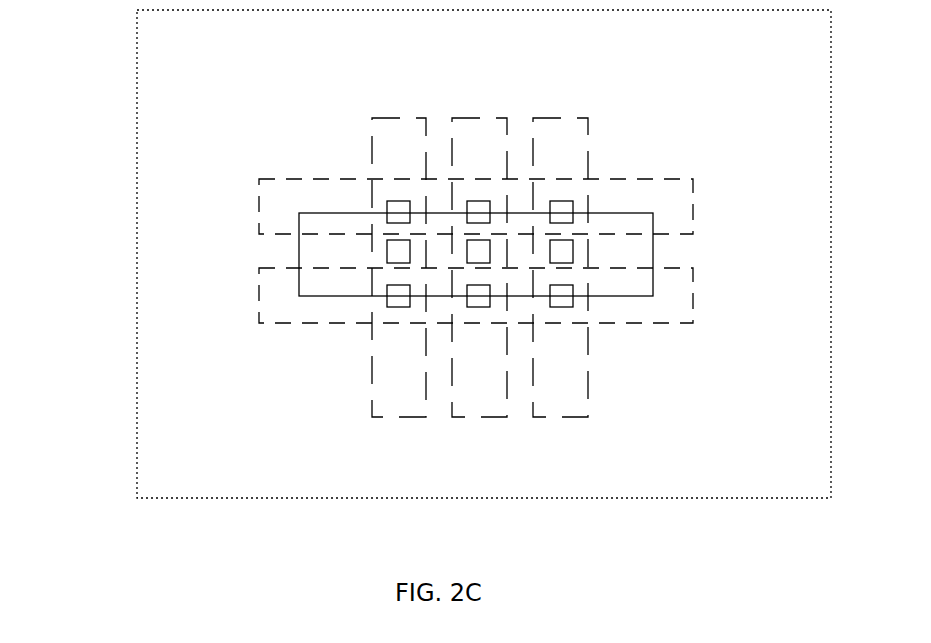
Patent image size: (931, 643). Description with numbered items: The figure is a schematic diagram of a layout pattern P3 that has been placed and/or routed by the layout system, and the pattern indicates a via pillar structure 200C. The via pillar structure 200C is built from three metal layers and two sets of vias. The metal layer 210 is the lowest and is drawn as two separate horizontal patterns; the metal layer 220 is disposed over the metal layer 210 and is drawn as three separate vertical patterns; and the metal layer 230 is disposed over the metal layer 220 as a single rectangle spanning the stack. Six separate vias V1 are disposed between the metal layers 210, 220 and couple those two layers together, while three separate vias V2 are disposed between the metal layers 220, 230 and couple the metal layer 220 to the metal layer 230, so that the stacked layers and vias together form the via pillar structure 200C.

The via pillar structure 200C is at (253, 51).
The layout pattern P3 is at (137, 143).
The metal layer 220 is at (410, 118).
The metal layer 210 is at (695, 203).
The metal layer 230 is at (653, 248).
The vias V1 is at (550, 205).
The vias V2 is at (387, 252).